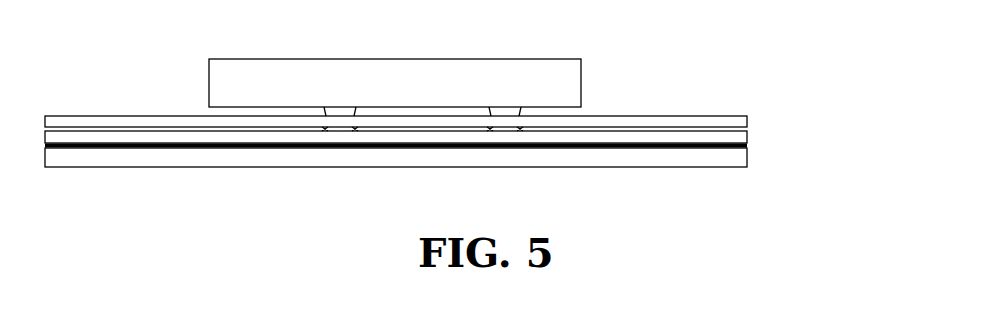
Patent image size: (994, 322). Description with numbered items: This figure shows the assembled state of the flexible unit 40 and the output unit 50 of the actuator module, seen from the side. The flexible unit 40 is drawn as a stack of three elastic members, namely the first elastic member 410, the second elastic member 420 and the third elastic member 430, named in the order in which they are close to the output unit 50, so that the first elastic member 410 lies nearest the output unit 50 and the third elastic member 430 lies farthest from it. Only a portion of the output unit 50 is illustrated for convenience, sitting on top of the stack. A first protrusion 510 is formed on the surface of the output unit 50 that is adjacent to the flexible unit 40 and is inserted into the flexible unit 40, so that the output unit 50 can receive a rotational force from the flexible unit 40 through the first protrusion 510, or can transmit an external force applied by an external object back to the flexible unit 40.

The flexible unit 40 is at (476, 143).
The first elastic member 410 is at (747, 122).
The second elastic member 420 is at (747, 133).
The third elastic member 430 is at (448, 169).
The output unit 50 is at (582, 82).
The first protrusion 510 is at (570, 110).